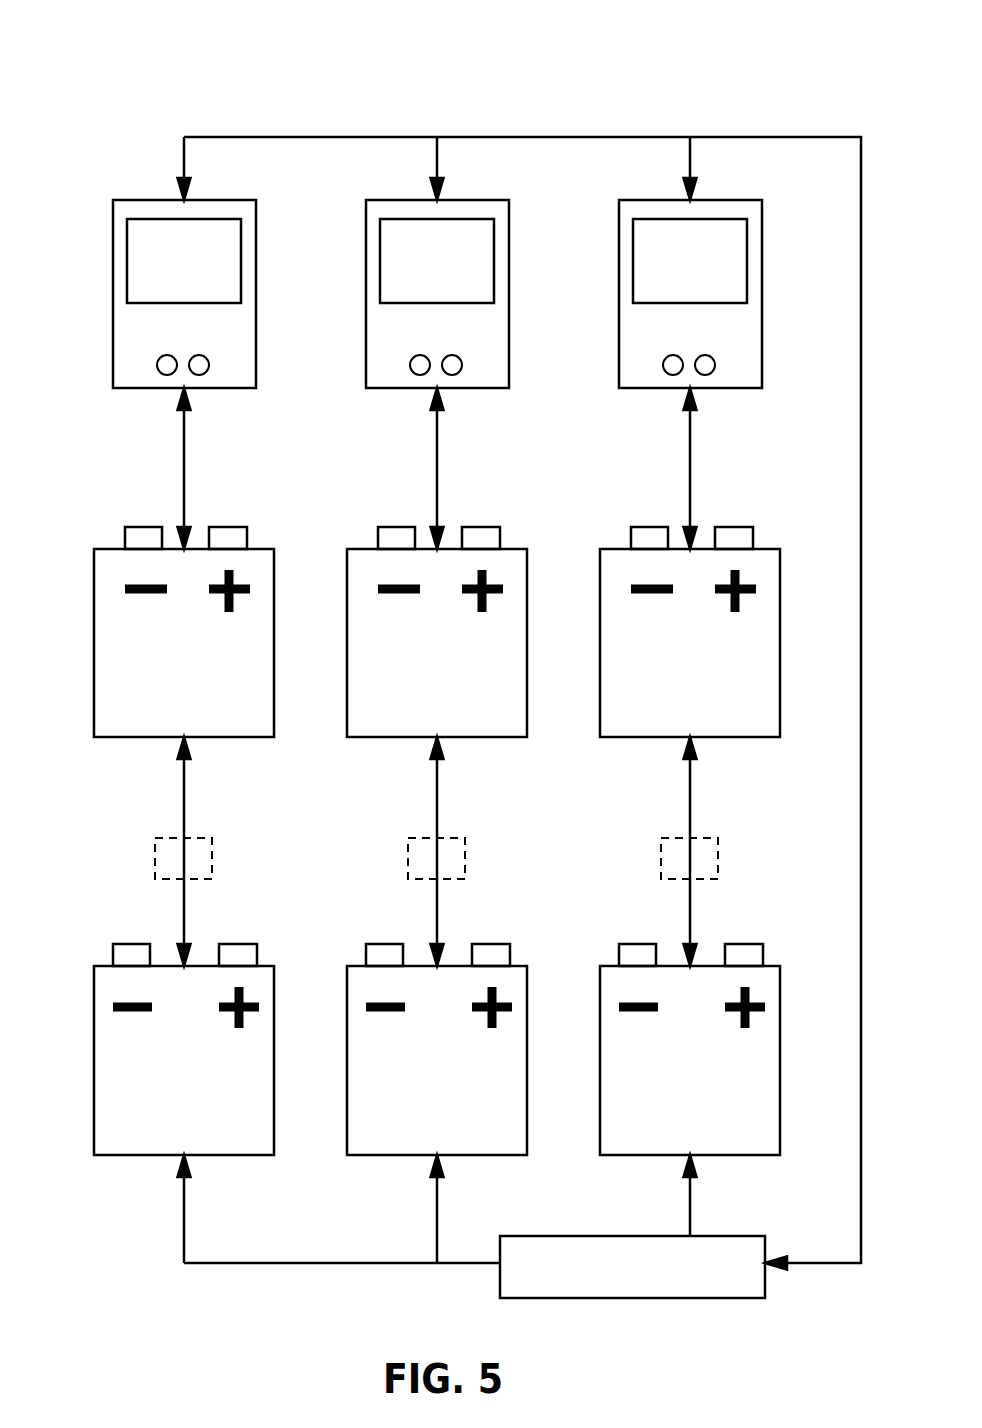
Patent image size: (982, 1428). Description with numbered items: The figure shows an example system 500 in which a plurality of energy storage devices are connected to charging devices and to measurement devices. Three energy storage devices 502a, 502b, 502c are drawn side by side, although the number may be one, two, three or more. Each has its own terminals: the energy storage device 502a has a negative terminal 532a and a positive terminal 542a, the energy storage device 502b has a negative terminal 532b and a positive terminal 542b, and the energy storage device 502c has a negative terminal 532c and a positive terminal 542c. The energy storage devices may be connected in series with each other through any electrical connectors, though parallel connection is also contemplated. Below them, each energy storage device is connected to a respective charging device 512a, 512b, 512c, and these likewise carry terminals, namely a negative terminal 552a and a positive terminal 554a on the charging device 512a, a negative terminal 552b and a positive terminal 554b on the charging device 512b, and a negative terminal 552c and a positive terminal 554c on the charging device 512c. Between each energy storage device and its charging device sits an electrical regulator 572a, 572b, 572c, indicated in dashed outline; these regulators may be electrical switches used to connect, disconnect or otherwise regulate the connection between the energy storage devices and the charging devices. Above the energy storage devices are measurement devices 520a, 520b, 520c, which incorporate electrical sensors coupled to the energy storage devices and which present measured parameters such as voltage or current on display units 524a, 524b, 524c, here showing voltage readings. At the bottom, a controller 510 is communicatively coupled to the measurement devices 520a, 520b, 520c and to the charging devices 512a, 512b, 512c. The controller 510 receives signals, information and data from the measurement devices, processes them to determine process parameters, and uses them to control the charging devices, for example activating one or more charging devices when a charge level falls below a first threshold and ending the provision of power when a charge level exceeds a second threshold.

The system 500 is at (178, 72).
The controller 510 is at (680, 1298).
The charging device 512a is at (230, 1155).
The charging device 512b is at (483, 1155).
The charging device 512c is at (736, 1155).
The measurement device 520a is at (113, 372).
The measurement device 520b is at (366, 372).
The measurement device 520c is at (619, 372).
The display unit 524a is at (242, 262).
The display unit 524b is at (495, 262).
The display unit 524c is at (748, 262).
The energy storage device 502a is at (148, 737).
The energy storage device 502b is at (401, 737).
The energy storage device 502c is at (654, 737).
The negative terminal 532a is at (125, 543).
The negative terminal 532b is at (378, 543).
The negative terminal 532c is at (631, 543).
The positive terminal 542a is at (238, 527).
The positive terminal 542b is at (491, 527).
The positive terminal 542c is at (744, 527).
The electrical regulator 572a is at (151, 857).
The electrical regulator 572b is at (404, 857).
The electrical regulator 572c is at (657, 857).
The negative terminal 552a is at (130, 944).
The negative terminal 552b is at (383, 944).
The negative terminal 552c is at (636, 944).
The positive terminal 554a is at (238, 944).
The positive terminal 554b is at (491, 944).
The positive terminal 554c is at (744, 944).